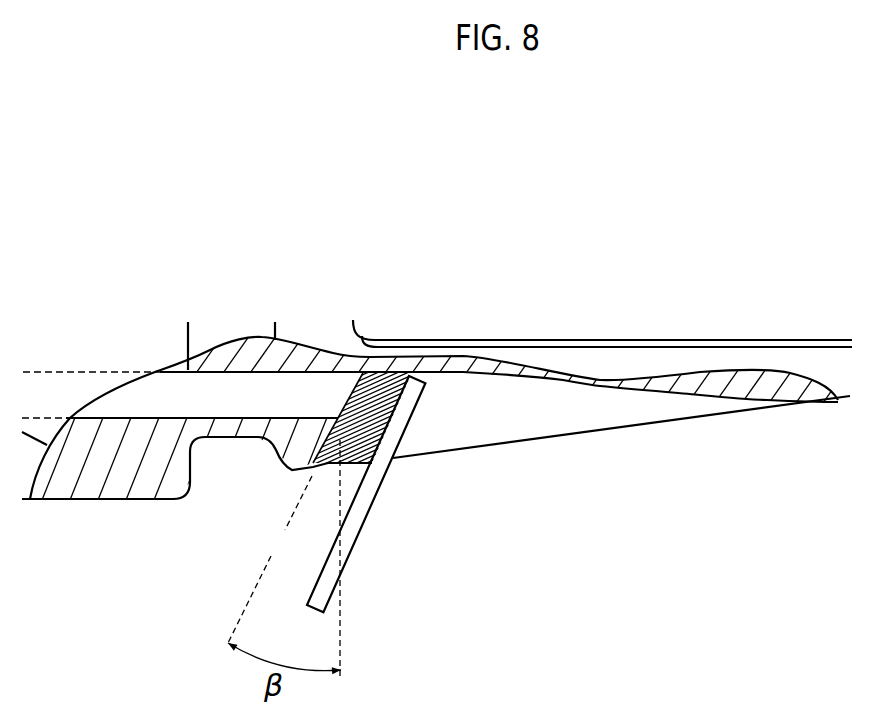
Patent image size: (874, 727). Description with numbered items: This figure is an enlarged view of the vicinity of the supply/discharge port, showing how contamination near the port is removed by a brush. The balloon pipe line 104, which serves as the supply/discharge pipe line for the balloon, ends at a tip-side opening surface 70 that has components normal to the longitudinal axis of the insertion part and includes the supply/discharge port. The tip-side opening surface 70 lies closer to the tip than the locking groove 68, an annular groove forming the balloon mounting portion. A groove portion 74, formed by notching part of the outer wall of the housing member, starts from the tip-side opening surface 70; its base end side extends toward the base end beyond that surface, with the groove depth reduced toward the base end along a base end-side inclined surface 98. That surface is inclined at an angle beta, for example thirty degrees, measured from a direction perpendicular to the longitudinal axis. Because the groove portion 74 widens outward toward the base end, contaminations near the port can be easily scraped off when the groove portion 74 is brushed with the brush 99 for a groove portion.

The balloon pipe line 104 is at (140, 390).
The tip-side opening surface 70 is at (339, 390).
The locking groove 68 is at (214, 440).
The brush for a groove portion 99 is at (373, 503).
The groove portion 74 is at (522, 433).
The base end-side inclined surface 98 is at (328, 466).